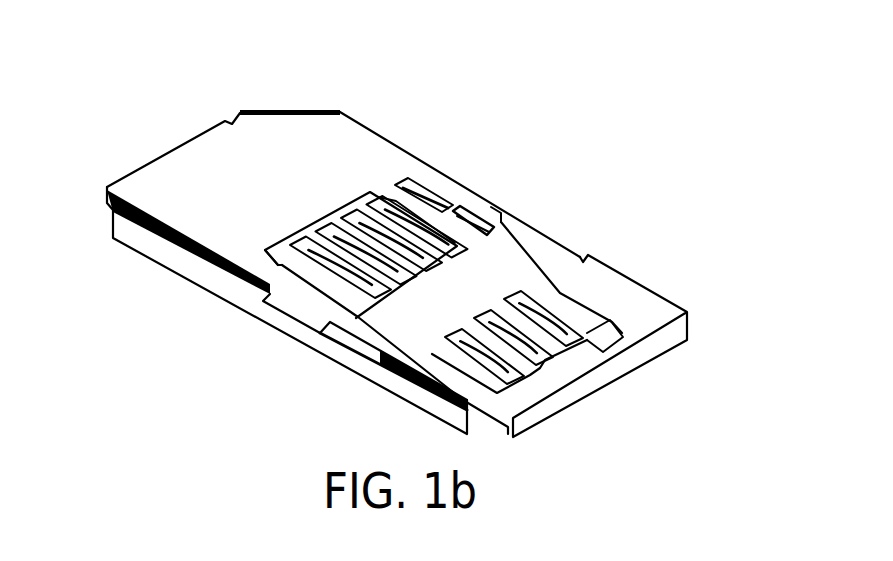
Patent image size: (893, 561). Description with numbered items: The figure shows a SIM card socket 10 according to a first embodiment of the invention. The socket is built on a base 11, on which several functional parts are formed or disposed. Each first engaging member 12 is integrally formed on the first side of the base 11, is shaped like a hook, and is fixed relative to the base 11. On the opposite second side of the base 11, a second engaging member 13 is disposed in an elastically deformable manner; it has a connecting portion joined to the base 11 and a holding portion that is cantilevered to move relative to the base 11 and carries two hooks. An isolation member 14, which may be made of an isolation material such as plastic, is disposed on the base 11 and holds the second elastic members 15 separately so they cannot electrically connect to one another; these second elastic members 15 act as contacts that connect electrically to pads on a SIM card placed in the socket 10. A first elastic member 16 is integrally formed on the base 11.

The SIM card socket 10 is at (63, 54).
The base 11 is at (297, 172).
The first engaging member 12 is at (483, 217).
The second engaging member 13 is at (280, 322).
The isolation member 14 is at (461, 285).
The second elastic member 15 is at (582, 337).
The first elastic member 16 is at (413, 180).